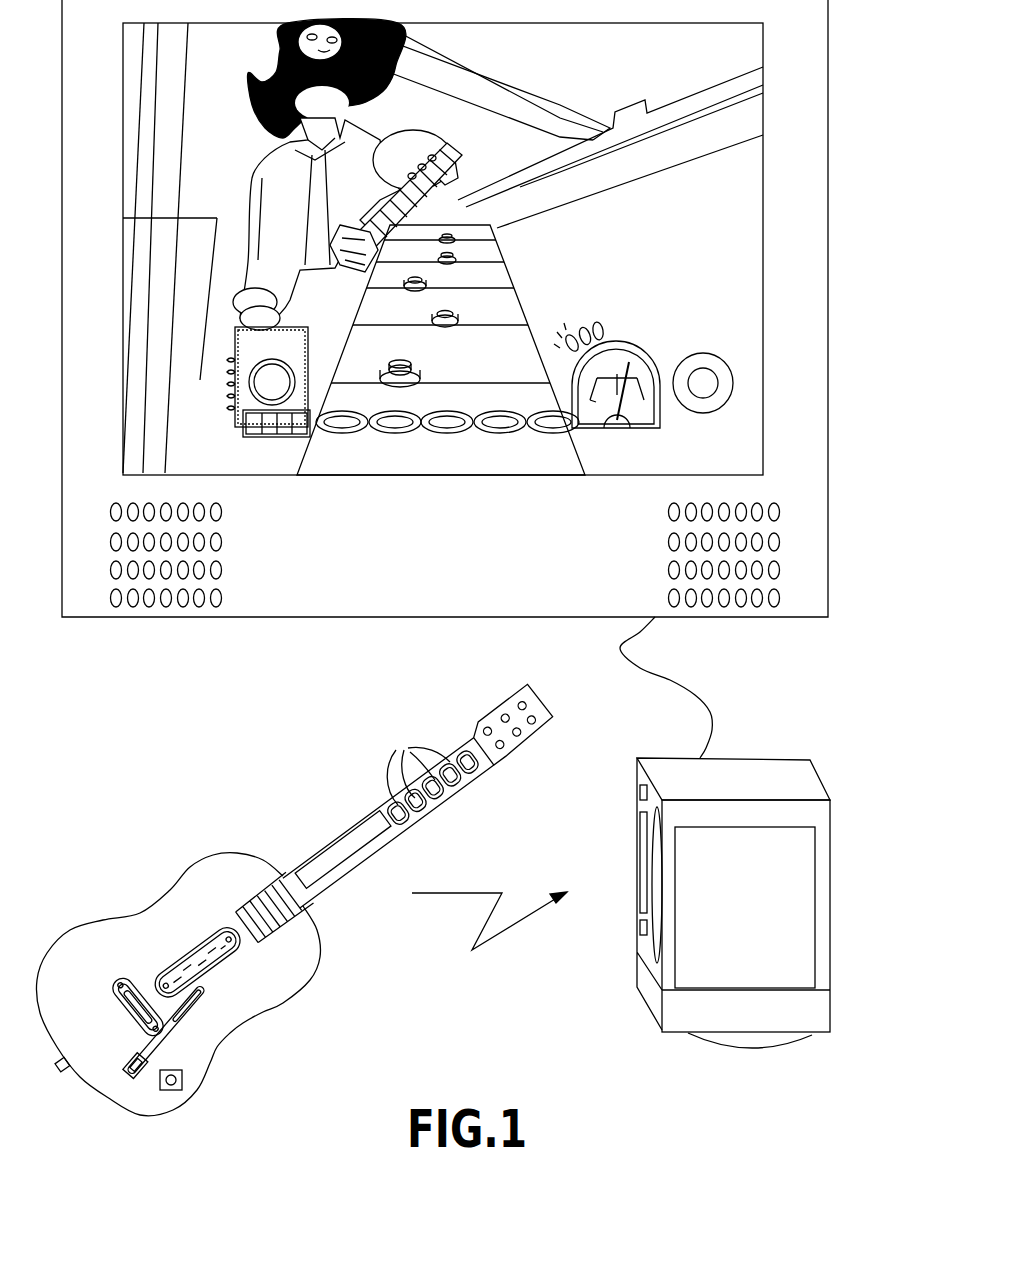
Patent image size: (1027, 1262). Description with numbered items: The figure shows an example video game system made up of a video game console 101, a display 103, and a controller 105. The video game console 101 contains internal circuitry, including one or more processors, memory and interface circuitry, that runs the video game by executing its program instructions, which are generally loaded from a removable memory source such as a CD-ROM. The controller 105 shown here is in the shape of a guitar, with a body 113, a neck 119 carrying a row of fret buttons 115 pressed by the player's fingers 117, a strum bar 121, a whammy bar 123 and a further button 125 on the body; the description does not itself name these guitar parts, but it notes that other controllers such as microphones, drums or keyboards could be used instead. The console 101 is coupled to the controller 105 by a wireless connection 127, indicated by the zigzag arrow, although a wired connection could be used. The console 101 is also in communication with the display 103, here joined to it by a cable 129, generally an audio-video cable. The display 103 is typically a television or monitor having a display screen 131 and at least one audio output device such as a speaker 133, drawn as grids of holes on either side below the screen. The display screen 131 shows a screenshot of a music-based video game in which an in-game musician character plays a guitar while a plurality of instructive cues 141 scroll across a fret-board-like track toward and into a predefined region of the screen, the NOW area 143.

The video game console 101 is at (797, 1041).
The display 103 is at (445, 327).
The controller 105 is at (312, 875).
The guitar body 113 is at (193, 866).
The fret buttons 115 is at (399, 833).
The fret button finger positions 117 is at (410, 763).
The guitar neck 119 is at (348, 836).
The strum bar 121 is at (194, 946).
The whammy bar 123 is at (203, 987).
The start/select button 125 is at (130, 1010).
The wireless connection 127 is at (495, 940).
The cable 129 is at (690, 690).
The display screen 131 is at (763, 240).
The speaker 133 is at (221, 541).
The instructive cues 141 is at (457, 314).
The NOW area 143 is at (454, 480).